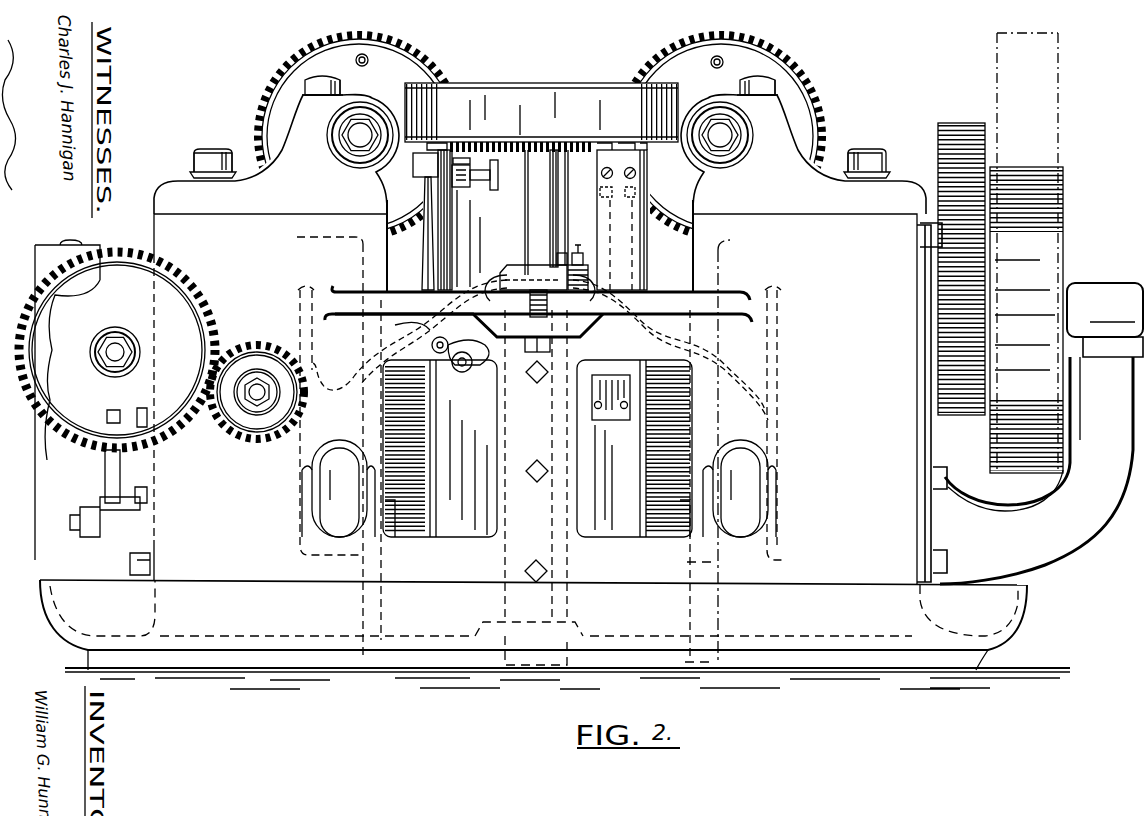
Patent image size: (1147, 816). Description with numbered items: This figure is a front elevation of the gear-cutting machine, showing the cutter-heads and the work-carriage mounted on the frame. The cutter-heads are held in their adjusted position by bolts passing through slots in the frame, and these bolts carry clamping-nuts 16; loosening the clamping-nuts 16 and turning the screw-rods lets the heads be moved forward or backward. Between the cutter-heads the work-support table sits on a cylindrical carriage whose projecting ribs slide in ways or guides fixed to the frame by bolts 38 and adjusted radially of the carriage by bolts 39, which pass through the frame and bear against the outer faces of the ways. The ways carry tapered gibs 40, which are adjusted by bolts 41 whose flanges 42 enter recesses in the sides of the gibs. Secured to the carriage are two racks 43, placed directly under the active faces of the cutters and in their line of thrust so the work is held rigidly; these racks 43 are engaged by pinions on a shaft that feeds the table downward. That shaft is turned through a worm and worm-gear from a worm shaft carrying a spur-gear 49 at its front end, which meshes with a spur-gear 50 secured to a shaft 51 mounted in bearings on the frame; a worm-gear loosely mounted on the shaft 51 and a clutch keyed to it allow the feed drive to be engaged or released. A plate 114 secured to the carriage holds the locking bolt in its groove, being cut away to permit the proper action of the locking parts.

The clamping-nuts 16 is at (778, 92).
The bolts 38 is at (528, 355).
The bolts 39 is at (534, 476).
The tapered gibs 40 is at (561, 252).
The bolts 41 is at (578, 256).
The flanges 42 is at (585, 262).
The racks 43 is at (392, 418).
The spur-gear 49 is at (262, 432).
The spur-gear 50 is at (203, 313).
The shaft 51 is at (122, 353).
The plate 114 is at (606, 417).